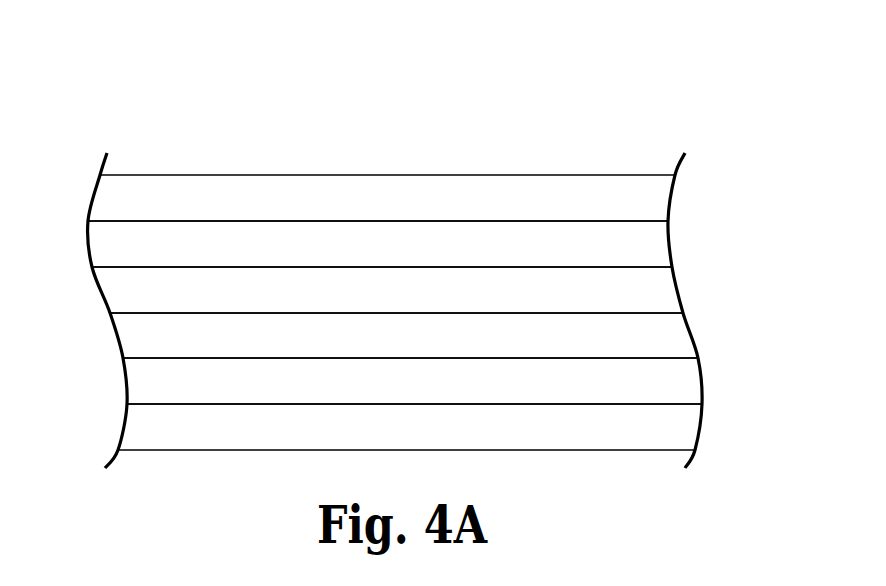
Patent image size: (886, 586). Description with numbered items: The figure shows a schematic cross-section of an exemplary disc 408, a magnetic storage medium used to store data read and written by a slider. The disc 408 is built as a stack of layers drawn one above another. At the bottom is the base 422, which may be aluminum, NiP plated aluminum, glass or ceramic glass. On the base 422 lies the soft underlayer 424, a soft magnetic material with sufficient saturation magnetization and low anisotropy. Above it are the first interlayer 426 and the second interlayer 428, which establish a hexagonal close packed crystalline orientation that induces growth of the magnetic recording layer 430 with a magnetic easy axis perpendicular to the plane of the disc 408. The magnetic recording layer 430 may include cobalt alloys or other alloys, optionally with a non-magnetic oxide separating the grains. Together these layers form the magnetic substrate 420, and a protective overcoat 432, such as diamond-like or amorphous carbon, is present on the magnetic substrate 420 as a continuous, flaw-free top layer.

The disc 408 is at (652, 110).
The magnetic substrate 420 is at (80, 218).
The base 422 is at (690, 427).
The soft underlayer 424 is at (693, 382).
The first interlayer 426 is at (683, 337).
The second interlayer 428 is at (665, 290).
The magnetic recording layer 430 is at (657, 245).
The protective overcoat 432 is at (658, 197).